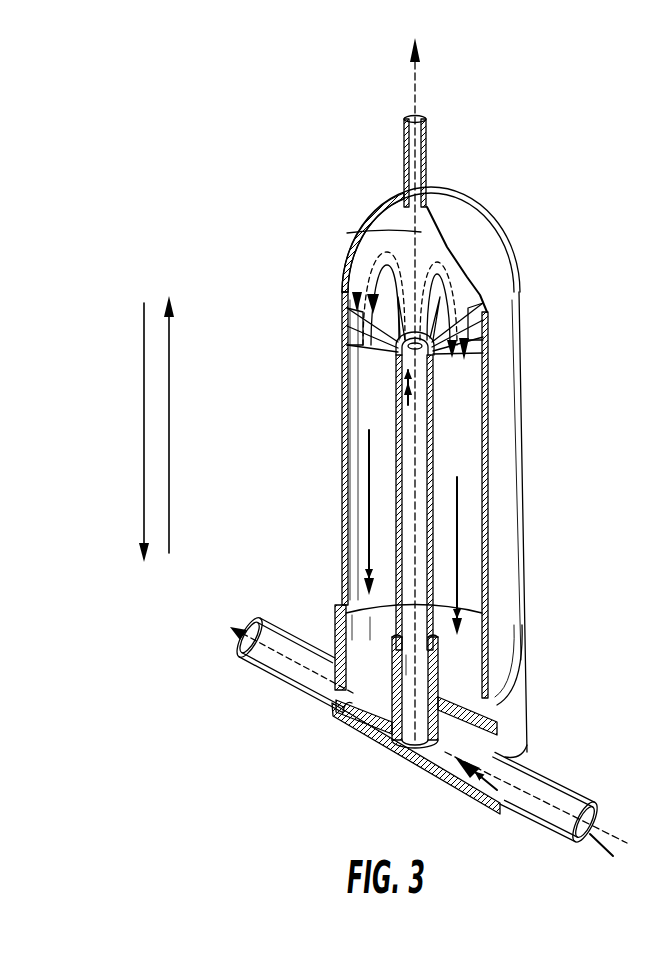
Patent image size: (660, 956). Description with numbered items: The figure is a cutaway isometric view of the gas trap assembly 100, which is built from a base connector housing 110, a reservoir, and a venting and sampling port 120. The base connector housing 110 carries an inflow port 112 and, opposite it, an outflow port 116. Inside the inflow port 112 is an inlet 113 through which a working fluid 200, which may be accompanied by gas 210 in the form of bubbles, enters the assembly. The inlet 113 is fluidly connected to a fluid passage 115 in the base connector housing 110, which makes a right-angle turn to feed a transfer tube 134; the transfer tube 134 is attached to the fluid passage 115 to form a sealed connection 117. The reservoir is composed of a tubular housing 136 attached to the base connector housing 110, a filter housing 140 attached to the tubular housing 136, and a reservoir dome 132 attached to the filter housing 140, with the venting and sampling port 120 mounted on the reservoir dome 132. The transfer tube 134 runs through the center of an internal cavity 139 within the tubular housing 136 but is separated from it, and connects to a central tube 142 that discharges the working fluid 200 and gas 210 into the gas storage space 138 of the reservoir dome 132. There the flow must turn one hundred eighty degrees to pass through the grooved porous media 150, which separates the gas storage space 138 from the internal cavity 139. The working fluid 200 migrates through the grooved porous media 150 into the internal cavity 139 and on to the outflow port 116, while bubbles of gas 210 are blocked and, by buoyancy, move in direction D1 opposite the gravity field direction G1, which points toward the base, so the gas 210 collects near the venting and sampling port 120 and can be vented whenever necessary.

The gas trap assembly 100 is at (278, 105).
The base connector housing 110 is at (417, 768).
The inflow port 112 is at (543, 782).
The inlet 113 is at (597, 852).
The fluid passage 115 is at (385, 730).
The outflow port 116 is at (273, 617).
The sealed connection 117 is at (433, 660).
The venting and sampling port 120 is at (410, 160).
The reservoir dome 132 is at (480, 232).
The transfer tube 134 is at (417, 453).
The tubular housing 136 is at (497, 537).
The gas storage space 138 is at (358, 243).
The internal cavity 139 is at (357, 478).
The filter housing 140 is at (357, 266).
The central tube 142 is at (400, 352).
The grooved porous media 150 is at (385, 342).
The working fluid 200 is at (368, 527).
The gas 210 is at (413, 75).
The gravity field direction G1 is at (144, 412).
The direction D1 is at (169, 383).